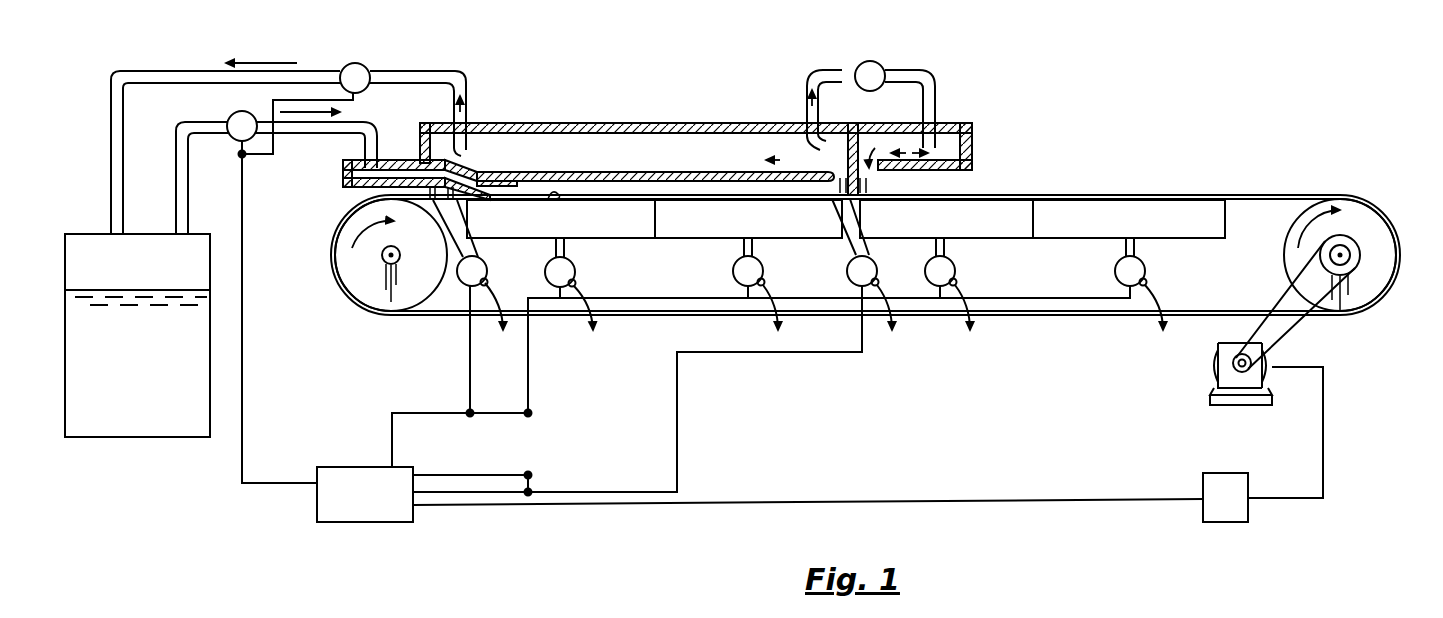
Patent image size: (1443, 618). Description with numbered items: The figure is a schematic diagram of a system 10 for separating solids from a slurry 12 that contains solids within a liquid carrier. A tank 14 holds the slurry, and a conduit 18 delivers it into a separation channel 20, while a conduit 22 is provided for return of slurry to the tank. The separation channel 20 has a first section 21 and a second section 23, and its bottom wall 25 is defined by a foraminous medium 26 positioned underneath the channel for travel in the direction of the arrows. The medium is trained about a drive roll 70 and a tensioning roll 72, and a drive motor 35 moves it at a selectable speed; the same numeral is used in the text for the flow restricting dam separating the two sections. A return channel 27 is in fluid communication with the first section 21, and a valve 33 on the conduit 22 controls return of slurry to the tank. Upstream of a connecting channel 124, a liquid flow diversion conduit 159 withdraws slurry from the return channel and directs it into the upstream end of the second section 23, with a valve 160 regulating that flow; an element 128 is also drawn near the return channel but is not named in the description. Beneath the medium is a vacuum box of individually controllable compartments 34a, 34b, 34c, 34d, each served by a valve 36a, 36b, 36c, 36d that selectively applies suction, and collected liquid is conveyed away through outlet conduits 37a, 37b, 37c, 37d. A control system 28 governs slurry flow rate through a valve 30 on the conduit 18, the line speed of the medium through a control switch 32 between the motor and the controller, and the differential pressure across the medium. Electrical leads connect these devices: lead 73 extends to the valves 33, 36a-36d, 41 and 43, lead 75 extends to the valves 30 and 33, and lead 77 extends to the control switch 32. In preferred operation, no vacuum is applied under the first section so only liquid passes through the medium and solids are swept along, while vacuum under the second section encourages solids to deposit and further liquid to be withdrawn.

The separation system 10 is at (645, 105).
The slurry 12 is at (137, 328).
The tank 14 is at (143, 232).
The conduit 18 is at (312, 137).
The separation channel 20 is at (430, 147).
The first section 21 is at (684, 186).
The conduit 22 is at (430, 70).
The second section 23 is at (948, 177).
The bottom wall 25 is at (516, 203).
The foraminous medium 26 is at (980, 197).
The return channel 27 is at (696, 146).
The control system 28 is at (317, 498).
The valve 30 is at (240, 112).
The control switch 32 is at (1203, 483).
The valve 33 is at (356, 63).
The vacuum compartment 34a is at (561, 219).
The vacuum compartment 34b is at (748, 219).
The vacuum compartment 34c is at (946, 219).
The vacuum compartment 34d is at (1129, 219).
The drive motor 35 is at (1216, 350).
The valve 36a is at (575, 265).
The valve 36b is at (762, 264).
The valve 36c is at (955, 264).
The valve 36d is at (1145, 264).
The outlet conduit 37a is at (580, 284).
The outlet conduit 37b is at (769, 284).
The outlet conduit 37c is at (961, 284).
The outlet conduit 37d is at (1151, 284).
The valve 41 is at (487, 264).
The valve 43 is at (879, 262).
The drive roll 70 is at (1378, 218).
The tensioning roll 72 is at (350, 229).
The electrical lead 73 is at (558, 492).
The electrical lead 75 is at (268, 482).
The electrical lead 77 is at (712, 503).
The connecting channel 124 is at (840, 180).
The vapor outlet 128 is at (520, 170).
The liquid flow diversion conduit 159 is at (825, 70).
The valve 160 is at (880, 64).